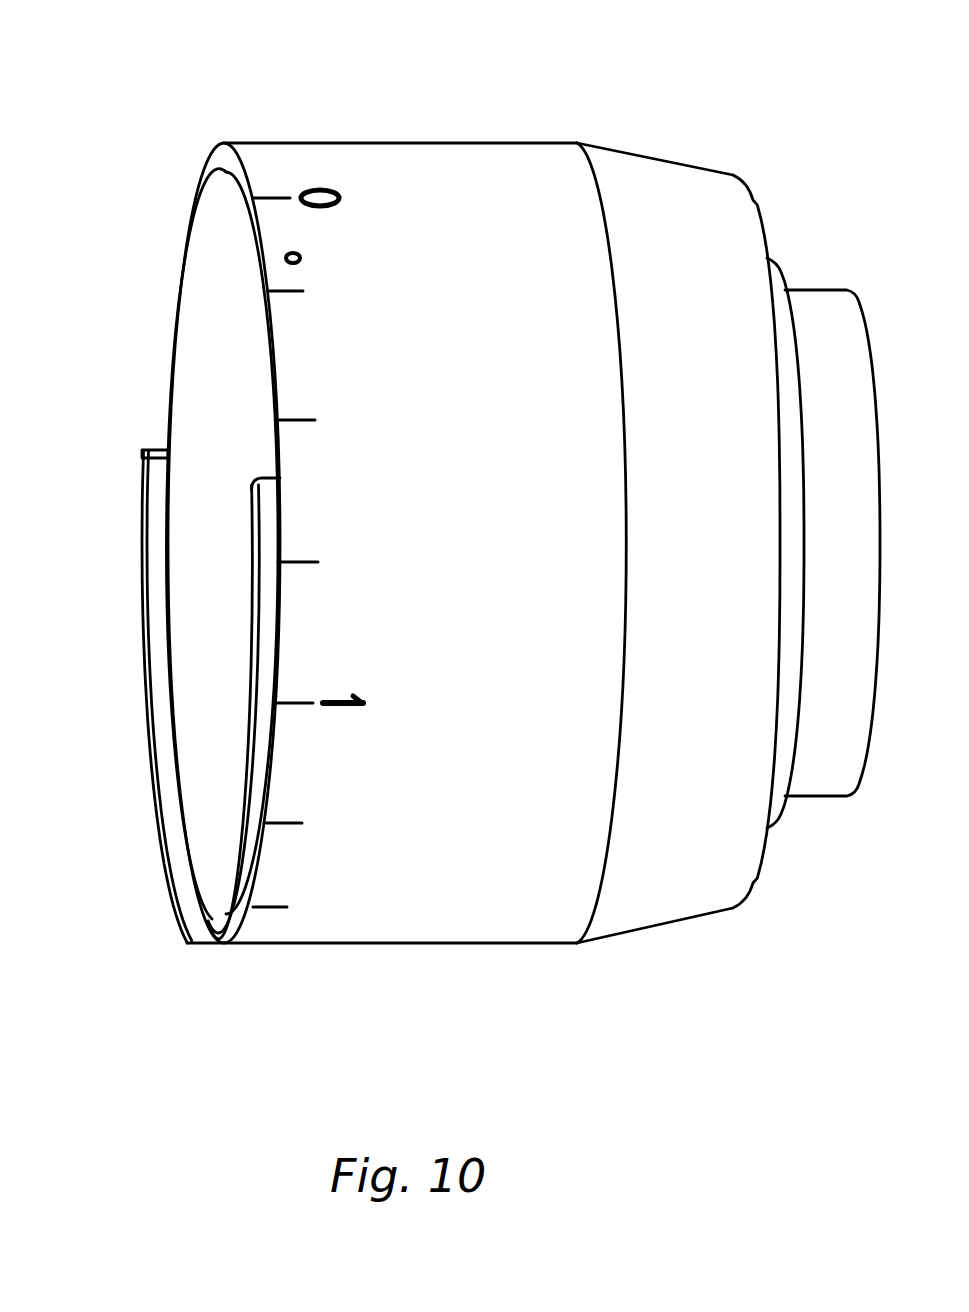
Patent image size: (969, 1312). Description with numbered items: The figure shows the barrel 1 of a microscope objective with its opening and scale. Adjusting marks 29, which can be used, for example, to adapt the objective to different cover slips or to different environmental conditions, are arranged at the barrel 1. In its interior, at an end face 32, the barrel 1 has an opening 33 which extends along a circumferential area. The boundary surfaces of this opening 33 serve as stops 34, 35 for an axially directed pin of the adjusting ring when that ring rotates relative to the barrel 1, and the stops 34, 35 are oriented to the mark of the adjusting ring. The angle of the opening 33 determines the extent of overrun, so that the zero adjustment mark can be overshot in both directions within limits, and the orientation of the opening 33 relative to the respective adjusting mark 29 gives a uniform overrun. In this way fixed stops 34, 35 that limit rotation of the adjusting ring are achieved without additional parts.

The barrel 1 is at (493, 945).
The opening 33 is at (220, 158).
The adjusting marks 29 is at (296, 565).
The end face 32 is at (143, 675).
The stop 34 is at (160, 452).
The stop 35 is at (262, 476).